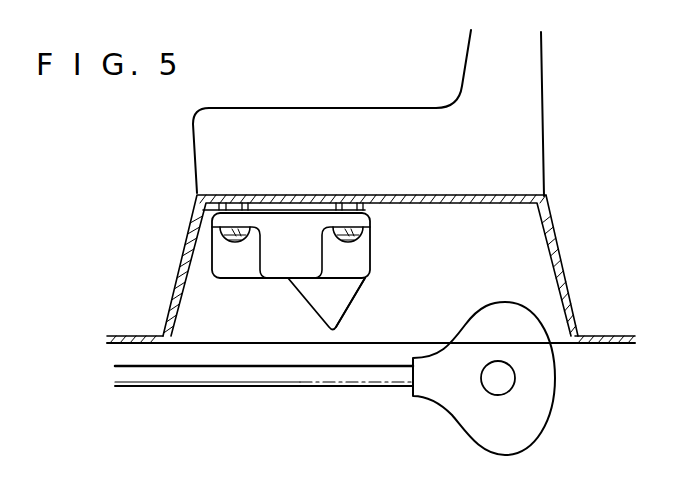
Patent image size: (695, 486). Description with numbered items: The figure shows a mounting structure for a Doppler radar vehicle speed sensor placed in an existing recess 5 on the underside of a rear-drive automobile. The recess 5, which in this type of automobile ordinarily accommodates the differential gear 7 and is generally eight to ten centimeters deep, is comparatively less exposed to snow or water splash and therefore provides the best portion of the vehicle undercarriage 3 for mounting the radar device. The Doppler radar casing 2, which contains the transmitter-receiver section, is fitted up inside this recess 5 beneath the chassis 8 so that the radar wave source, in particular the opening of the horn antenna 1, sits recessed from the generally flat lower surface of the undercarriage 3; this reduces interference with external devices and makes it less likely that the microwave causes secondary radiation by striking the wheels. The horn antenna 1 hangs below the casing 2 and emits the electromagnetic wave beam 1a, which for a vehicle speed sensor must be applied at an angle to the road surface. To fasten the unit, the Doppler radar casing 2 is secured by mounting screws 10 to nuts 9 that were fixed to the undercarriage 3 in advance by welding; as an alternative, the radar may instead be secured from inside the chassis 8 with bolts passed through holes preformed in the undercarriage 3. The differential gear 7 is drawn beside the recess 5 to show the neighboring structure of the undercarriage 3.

The horn antenna 1 is at (313, 308).
The electromagnetic wave beam 1a is at (354, 296).
The Doppler radar casing 2 is at (240, 281).
The undercarriage 3 is at (602, 335).
The recess 5 is at (550, 220).
The differential gear 7 is at (554, 401).
The housing body 8 is at (313, 107).
The nuts 9 is at (365, 207).
The mounting screws 10 is at (365, 243).